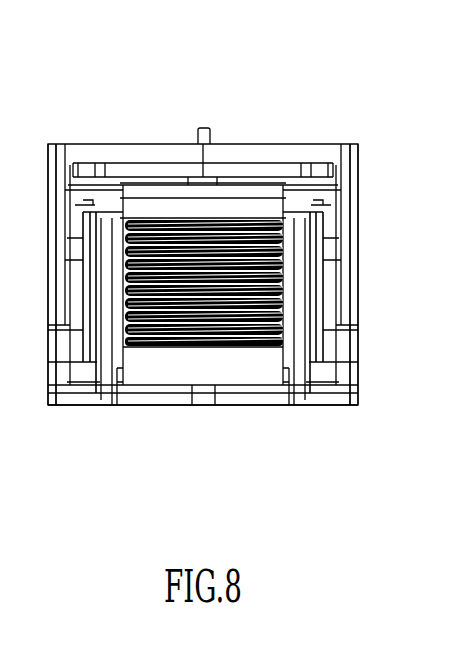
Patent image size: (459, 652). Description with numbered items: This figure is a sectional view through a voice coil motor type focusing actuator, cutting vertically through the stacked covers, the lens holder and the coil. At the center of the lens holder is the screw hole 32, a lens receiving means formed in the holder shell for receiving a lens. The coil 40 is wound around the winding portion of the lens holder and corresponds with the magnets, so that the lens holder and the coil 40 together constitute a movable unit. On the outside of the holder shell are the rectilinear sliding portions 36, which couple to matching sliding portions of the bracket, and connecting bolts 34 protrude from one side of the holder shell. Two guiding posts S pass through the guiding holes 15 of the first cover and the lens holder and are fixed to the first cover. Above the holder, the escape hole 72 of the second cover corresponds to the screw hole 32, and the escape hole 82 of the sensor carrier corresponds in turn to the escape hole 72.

The guiding holes 15 is at (250, 407).
The screw hole 32 is at (237, 330).
The connecting bolts 34 is at (94, 187).
The rectilinear sliding portions 36 is at (90, 200).
The coil 40 is at (120, 278).
The escape hole 72 is at (230, 173).
The escape hole 82 is at (256, 175).
The guiding posts S is at (109, 400).